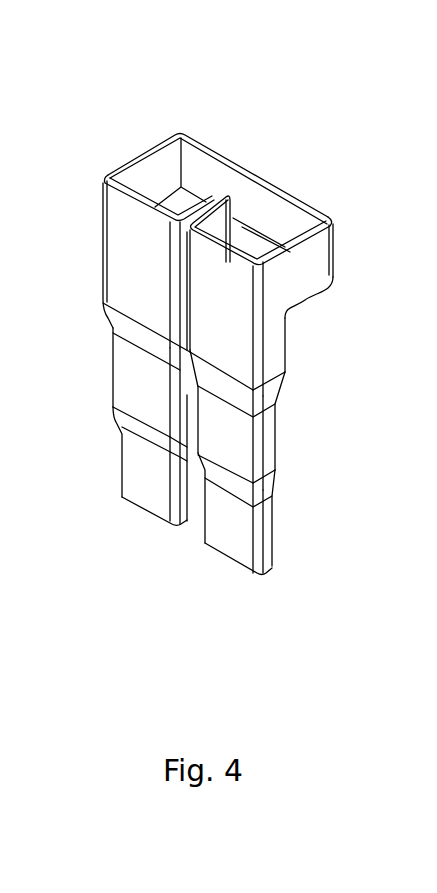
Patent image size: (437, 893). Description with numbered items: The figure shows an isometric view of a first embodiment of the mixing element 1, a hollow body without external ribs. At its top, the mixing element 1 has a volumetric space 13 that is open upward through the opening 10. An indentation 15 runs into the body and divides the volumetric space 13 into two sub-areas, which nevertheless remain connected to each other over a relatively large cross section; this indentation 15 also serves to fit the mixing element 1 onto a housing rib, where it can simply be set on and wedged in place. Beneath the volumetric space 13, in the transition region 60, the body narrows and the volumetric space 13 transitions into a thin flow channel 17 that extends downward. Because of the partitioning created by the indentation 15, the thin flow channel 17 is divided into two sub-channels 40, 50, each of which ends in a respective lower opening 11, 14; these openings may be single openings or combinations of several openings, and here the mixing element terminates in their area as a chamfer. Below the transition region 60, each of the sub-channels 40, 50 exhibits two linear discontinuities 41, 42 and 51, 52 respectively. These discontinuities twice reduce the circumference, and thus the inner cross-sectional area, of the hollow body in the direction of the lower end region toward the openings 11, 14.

The mixing element 1 is at (71, 198).
The opening 10 is at (148, 168).
The lower opening 11 is at (150, 518).
The volumetric space 13 is at (320, 248).
The lower opening 14 is at (237, 567).
The indentation 15 is at (208, 200).
The thin flow channel 17 is at (280, 353).
The sub-channel 40 is at (96, 375).
The linear discontinuity 41 is at (107, 323).
The linear discontinuity 42 is at (118, 423).
The sub-channel 50 is at (292, 448).
The linear discontinuity 51 is at (277, 392).
The linear discontinuity 52 is at (270, 490).
The transition region 60 is at (303, 308).